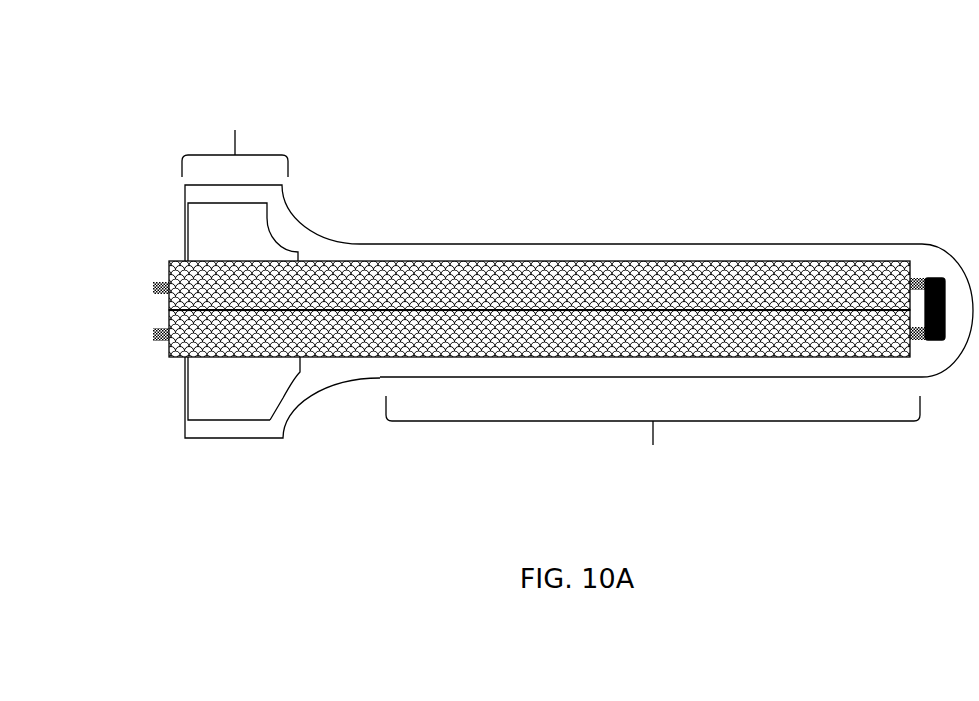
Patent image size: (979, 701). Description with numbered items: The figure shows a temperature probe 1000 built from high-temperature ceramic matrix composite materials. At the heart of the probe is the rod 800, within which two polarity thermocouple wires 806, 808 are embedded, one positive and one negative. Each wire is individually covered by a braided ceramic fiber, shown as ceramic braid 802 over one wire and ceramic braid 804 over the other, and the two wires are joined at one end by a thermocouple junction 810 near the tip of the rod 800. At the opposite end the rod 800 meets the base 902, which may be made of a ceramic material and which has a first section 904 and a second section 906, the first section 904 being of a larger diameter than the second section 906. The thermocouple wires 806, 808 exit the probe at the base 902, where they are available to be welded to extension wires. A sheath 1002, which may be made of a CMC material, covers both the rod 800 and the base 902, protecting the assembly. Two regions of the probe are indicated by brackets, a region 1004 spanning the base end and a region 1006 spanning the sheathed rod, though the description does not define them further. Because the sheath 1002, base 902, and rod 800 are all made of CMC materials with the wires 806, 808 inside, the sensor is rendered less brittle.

The temperature probe 1000 is at (485, 133).
The sheath 1002 is at (635, 244).
The proximal flange section 1004 is at (235, 132).
The distal body section 1006 is at (653, 445).
The rod 800 is at (539, 308).
The ceramic braid 802 is at (412, 275).
The ceramic braid 804 is at (397, 338).
The thermocouple wire 806 is at (157, 283).
The thermocouple wire 808 is at (152, 335).
The thermocouple junction 810 is at (932, 275).
The base 902 is at (218, 248).
The first section 904 is at (213, 415).
The second section 906 is at (283, 378).